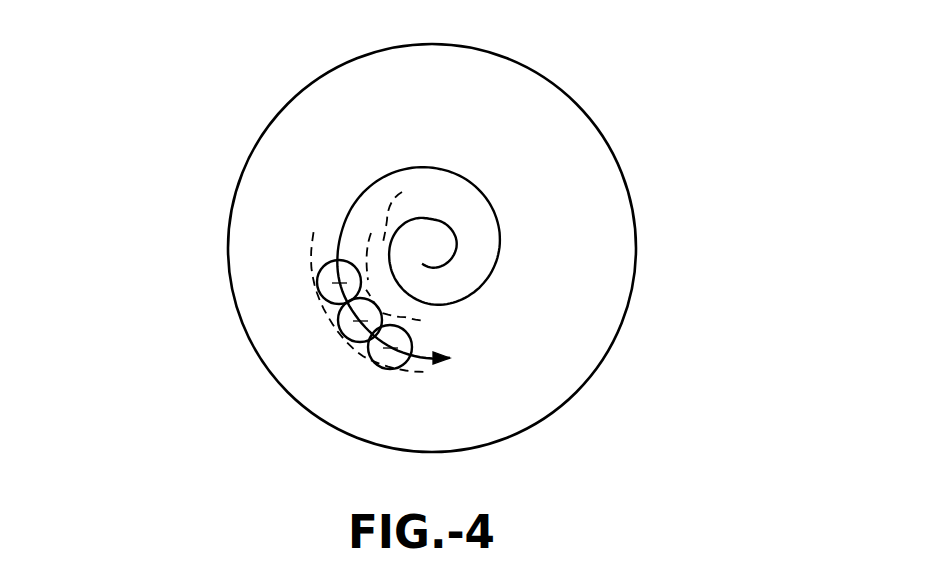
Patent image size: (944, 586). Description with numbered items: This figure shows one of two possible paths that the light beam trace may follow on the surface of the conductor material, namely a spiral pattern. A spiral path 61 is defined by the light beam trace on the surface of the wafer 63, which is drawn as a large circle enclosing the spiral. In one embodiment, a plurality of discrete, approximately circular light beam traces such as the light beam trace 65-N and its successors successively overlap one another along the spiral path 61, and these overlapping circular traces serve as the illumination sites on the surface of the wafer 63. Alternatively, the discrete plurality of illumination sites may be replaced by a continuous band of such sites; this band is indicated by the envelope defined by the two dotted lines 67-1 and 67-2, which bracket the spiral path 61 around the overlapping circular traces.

The wafer 63 is at (573, 133).
The spiral path 61 is at (481, 190).
The dotted line 67-1 is at (312, 266).
The dotted line 67-2 is at (410, 231).
The light beam trace 65-N is at (318, 284).